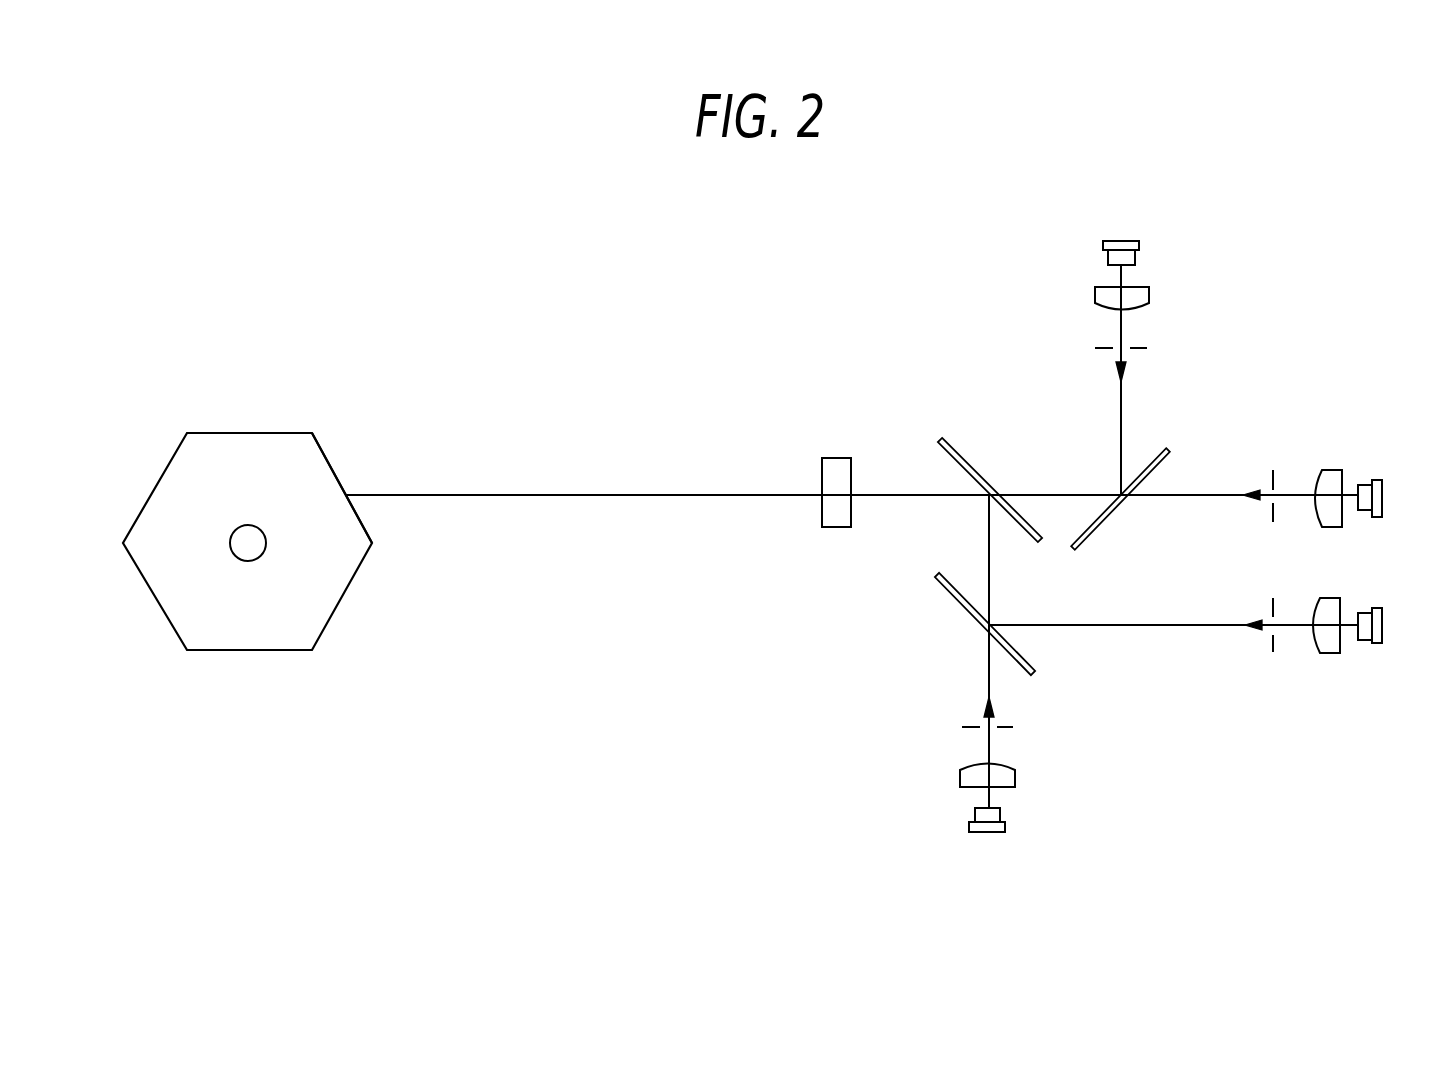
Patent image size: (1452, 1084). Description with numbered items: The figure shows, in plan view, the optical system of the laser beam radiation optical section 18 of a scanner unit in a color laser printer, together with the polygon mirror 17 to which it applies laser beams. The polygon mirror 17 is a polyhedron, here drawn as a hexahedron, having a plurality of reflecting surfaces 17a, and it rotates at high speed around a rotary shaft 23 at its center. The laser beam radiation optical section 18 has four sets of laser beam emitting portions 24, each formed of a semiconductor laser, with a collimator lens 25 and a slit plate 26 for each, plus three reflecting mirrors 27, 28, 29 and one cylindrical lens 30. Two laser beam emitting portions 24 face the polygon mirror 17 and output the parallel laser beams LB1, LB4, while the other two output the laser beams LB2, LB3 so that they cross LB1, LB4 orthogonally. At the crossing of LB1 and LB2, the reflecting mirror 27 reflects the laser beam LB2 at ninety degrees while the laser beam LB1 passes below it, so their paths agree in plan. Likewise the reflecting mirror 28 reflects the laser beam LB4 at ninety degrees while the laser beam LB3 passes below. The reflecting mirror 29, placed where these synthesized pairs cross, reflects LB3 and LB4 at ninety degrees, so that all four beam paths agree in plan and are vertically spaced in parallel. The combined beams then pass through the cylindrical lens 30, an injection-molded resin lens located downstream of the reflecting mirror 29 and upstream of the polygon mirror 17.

The polygon mirror 17 is at (260, 675).
The reflecting surface 17a is at (357, 513).
The rotary shaft 23 is at (245, 535).
The laser beam radiation optical section 18 is at (1259, 316).
The laser beam emitting portion 24 is at (1122, 241).
The collimator lens 25 is at (1149, 295).
The slit plate 26 is at (1137, 348).
The reflecting mirror 27 is at (1165, 460).
The reflecting mirror 28 is at (945, 587).
The reflecting mirror 29 is at (970, 463).
The cylindrical lens 30 is at (835, 527).
The laser beam LB1 is at (1193, 498).
The laser beam LB2 is at (1119, 408).
The laser beam LB3 is at (988, 675).
The laser beam LB4 is at (1187, 627).